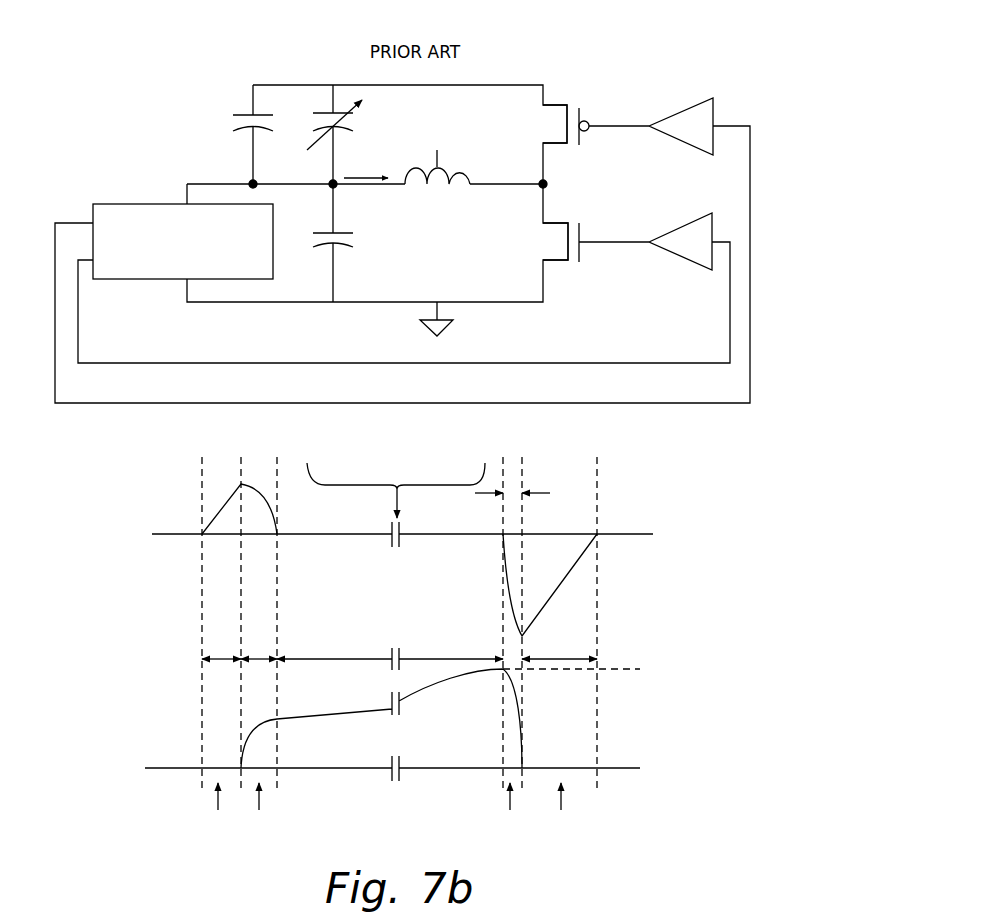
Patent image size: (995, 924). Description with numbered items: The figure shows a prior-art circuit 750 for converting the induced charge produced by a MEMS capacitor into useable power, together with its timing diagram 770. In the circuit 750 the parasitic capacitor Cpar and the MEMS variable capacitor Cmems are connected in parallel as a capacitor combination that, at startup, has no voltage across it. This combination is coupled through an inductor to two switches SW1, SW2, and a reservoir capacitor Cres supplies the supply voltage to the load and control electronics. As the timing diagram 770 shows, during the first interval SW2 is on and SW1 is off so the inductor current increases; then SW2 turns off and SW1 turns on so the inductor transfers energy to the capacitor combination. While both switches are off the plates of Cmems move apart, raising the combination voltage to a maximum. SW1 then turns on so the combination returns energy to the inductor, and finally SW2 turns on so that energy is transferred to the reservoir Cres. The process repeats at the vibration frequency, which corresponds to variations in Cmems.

The circuit 750 is at (612, 95).
The timing diagram 770 is at (671, 500).
The first switch SW1 is at (610, 126).
The second switch SW2 is at (610, 241).
The parasitic capacitor Cpar is at (231, 119).
The MEMS variable capacitor Cmems is at (370, 125).
The reservoir capacitor Cres is at (355, 239).